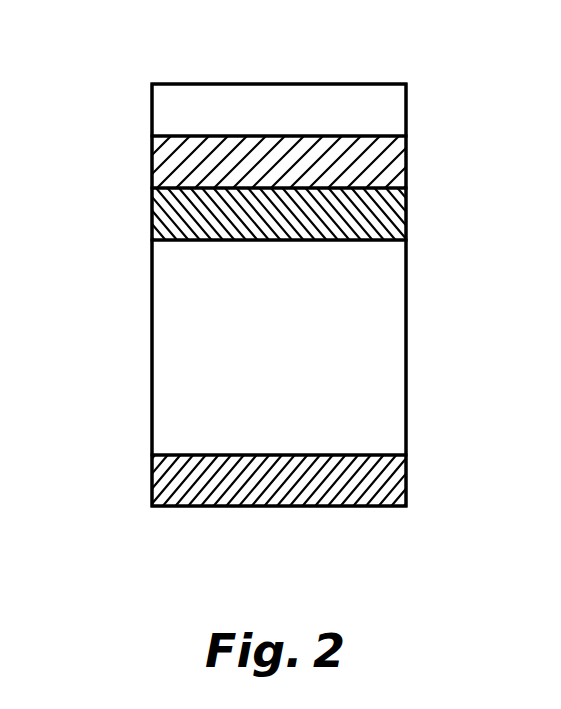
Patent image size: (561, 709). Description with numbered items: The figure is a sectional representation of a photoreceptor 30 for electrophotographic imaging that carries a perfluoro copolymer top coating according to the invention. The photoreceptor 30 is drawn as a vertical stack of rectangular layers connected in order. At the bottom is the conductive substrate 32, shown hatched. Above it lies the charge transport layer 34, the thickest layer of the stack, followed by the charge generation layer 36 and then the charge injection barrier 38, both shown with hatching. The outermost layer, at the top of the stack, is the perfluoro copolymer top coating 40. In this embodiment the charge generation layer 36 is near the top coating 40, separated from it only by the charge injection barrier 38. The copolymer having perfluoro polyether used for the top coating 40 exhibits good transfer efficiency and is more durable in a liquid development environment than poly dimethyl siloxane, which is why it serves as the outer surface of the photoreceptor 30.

The photoreceptor 30 is at (117, 57).
The conductive substrate 32 is at (406, 482).
The charge transport layer 34 is at (406, 352).
The charge generation layer 36 is at (406, 218).
The charge injection barrier 38 is at (406, 157).
The perfluoro copolymer top coating 40 is at (406, 103).